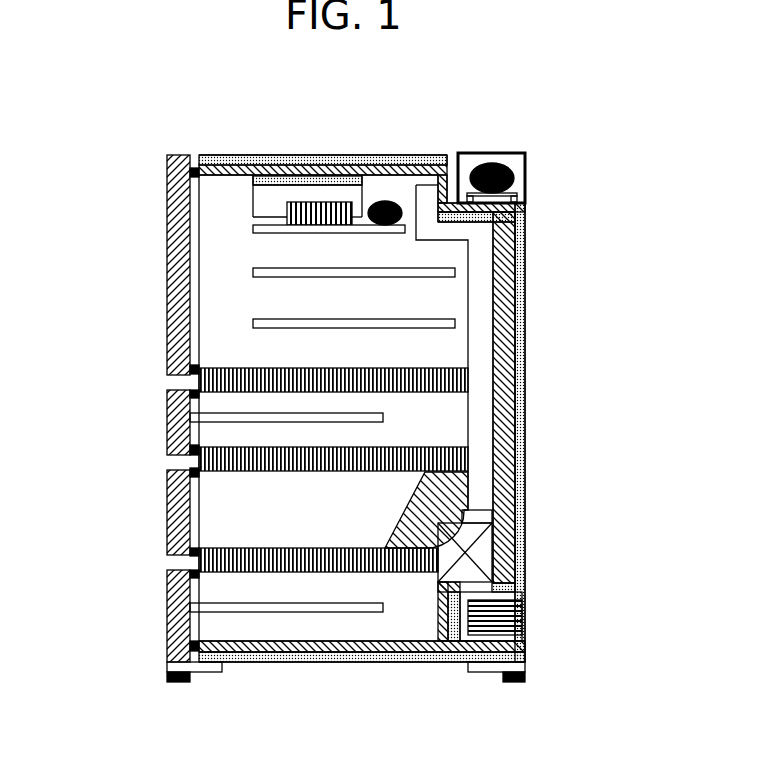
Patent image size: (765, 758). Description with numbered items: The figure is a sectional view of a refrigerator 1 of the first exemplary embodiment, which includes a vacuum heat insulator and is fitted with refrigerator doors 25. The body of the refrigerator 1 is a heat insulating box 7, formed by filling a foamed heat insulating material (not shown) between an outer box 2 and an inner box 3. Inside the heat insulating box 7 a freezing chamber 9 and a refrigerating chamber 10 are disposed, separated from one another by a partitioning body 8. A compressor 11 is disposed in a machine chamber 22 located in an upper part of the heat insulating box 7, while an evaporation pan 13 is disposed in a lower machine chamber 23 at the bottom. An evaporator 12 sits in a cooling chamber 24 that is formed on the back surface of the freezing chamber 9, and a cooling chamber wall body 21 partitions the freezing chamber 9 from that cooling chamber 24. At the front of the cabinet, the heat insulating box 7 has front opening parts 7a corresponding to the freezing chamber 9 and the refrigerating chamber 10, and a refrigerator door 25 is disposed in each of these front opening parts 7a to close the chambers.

The refrigerator 1 is at (263, 125).
The outer box 2 is at (525, 240).
The inner box 3 is at (495, 285).
The heat insulating box 7 is at (520, 410).
The front opening part 7a is at (193, 257).
The partitioning body 8 is at (268, 379).
The freezing chamber 9 is at (248, 437).
The refrigerating chamber 10 is at (228, 296).
The compressor 11 is at (510, 170).
The evaporator 12 is at (465, 567).
The evaporation pan 13 is at (500, 615).
The cooling chamber wall body 21 is at (445, 488).
The machine chamber 22 is at (488, 152).
The lower machine chamber 23 is at (463, 623).
The cooling chamber 24 is at (457, 517).
The refrigerator door 25 is at (167, 204).